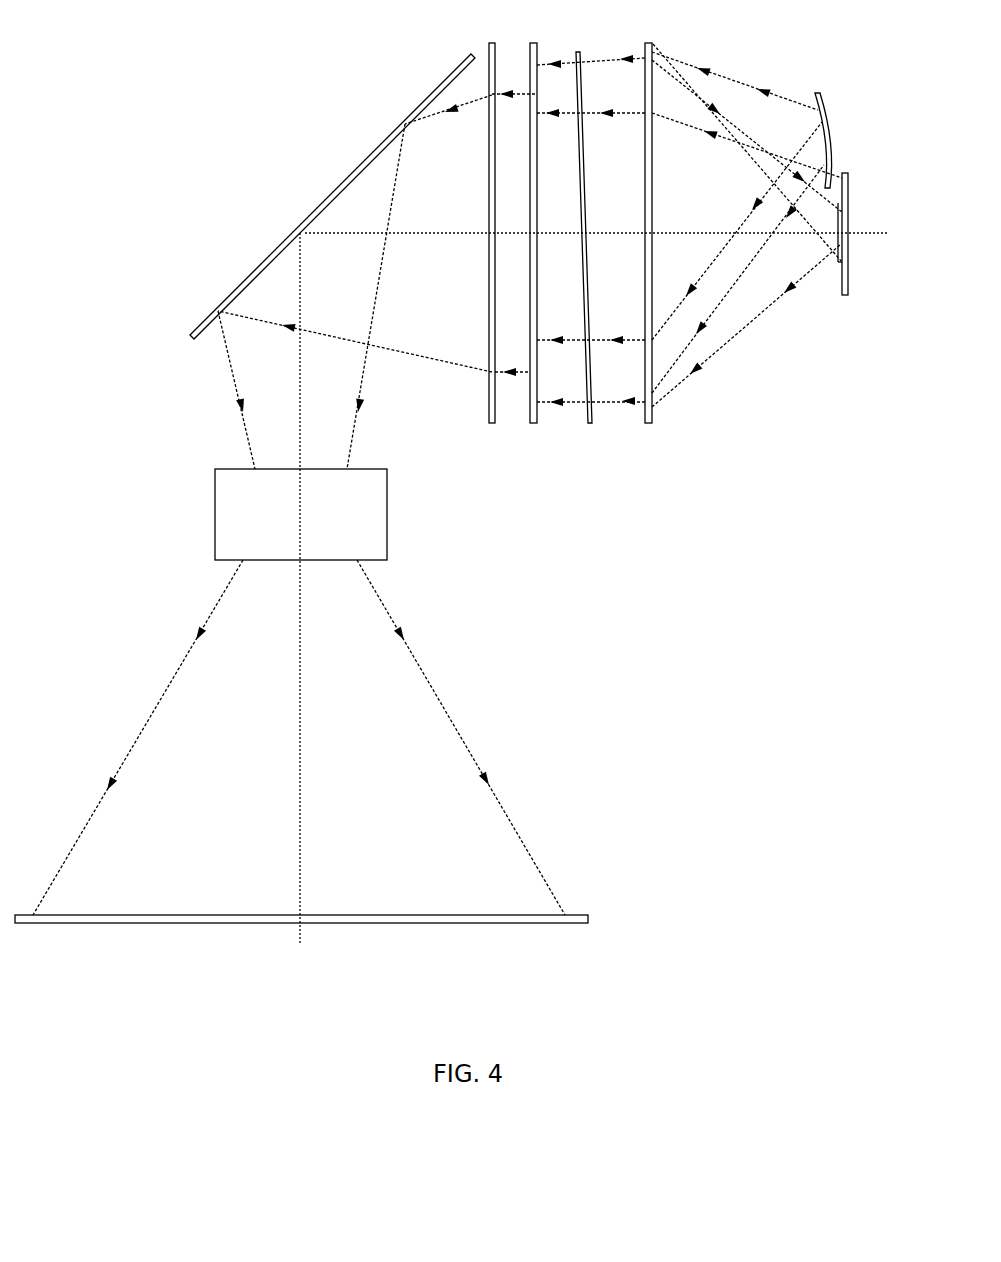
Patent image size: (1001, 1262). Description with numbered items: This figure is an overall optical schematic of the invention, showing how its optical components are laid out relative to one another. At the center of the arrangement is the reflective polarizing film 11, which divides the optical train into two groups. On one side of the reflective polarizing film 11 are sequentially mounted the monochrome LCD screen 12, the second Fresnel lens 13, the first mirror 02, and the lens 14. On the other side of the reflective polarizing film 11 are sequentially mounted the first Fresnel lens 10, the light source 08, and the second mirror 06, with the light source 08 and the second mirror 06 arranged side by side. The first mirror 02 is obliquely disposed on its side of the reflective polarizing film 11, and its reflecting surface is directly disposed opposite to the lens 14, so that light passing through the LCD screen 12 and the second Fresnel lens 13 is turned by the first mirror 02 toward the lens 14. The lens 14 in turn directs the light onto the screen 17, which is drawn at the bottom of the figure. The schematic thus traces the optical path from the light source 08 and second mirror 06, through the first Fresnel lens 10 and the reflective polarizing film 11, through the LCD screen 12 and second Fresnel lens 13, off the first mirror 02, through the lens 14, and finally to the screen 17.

The first mirror 02 is at (198, 328).
The second mirror 06 is at (868, 151).
The light source 08 is at (880, 245).
The first Fresnel lens 10 is at (649, 423).
The reflective polarizing film 11 is at (590, 423).
The LCD screen 12 is at (534, 423).
The second Fresnel lens 13 is at (492, 423).
The lens 14 is at (240, 508).
The screen 17 is at (60, 922).